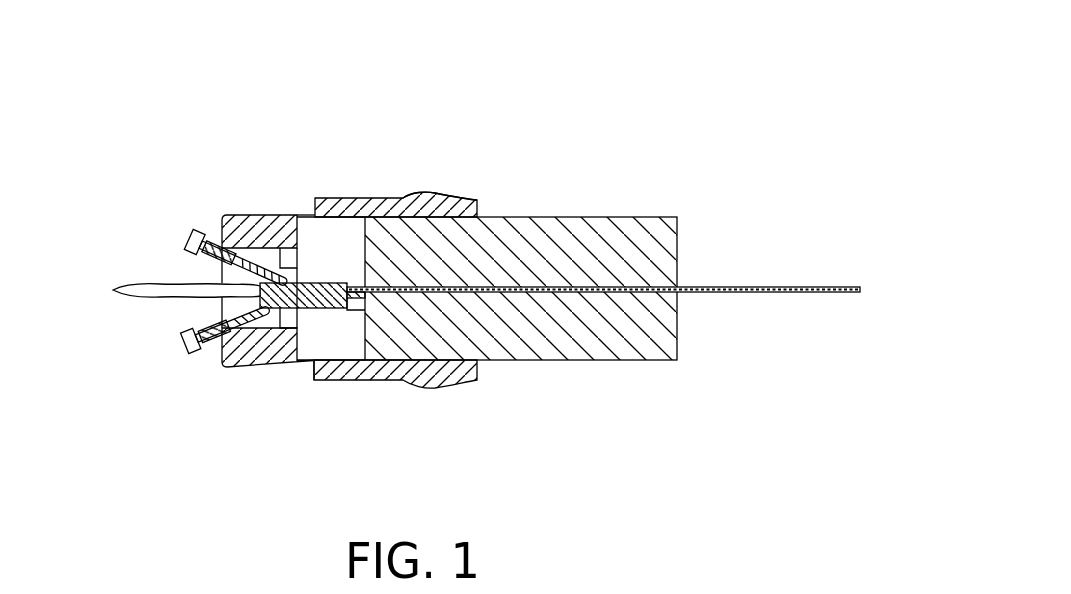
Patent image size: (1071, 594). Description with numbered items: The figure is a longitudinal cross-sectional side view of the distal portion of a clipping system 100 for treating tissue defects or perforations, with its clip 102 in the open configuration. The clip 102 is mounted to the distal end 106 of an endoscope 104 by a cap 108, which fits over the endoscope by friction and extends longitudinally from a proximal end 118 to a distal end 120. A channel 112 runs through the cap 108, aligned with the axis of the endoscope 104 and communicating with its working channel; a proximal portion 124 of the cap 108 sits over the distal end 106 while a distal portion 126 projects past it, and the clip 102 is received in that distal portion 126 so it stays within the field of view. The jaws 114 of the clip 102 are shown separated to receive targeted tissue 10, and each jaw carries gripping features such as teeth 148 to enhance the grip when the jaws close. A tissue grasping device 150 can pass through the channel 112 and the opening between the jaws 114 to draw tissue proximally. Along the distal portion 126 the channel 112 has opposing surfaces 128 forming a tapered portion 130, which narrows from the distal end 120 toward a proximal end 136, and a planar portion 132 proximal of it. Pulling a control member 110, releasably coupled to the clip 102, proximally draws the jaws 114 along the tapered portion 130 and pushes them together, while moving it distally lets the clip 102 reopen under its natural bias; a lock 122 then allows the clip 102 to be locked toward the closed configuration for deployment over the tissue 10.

The targeted tissue 10 is at (140, 282).
The clipping system 100 is at (458, 76).
The clip 102 is at (282, 280).
The endoscope 104 is at (521, 248).
The distal end 106 is at (408, 206).
The cap 108 is at (409, 222).
The control member 110 is at (729, 304).
The channel 112 is at (337, 347).
The jaws 114 is at (220, 243).
The proximal end 118 is at (497, 216).
The distal end 120 is at (185, 285).
The lock 122 is at (260, 271).
The proximal portion 124 is at (478, 199).
The distal portion 126 is at (297, 214).
The opposing surfaces 128 is at (285, 265).
The tapered portion 130 is at (256, 250).
The planar portion 132 is at (272, 309).
The proximal end 136 is at (297, 313).
The teeth 148 is at (190, 236).
The tissue grasping device 150 is at (319, 270).